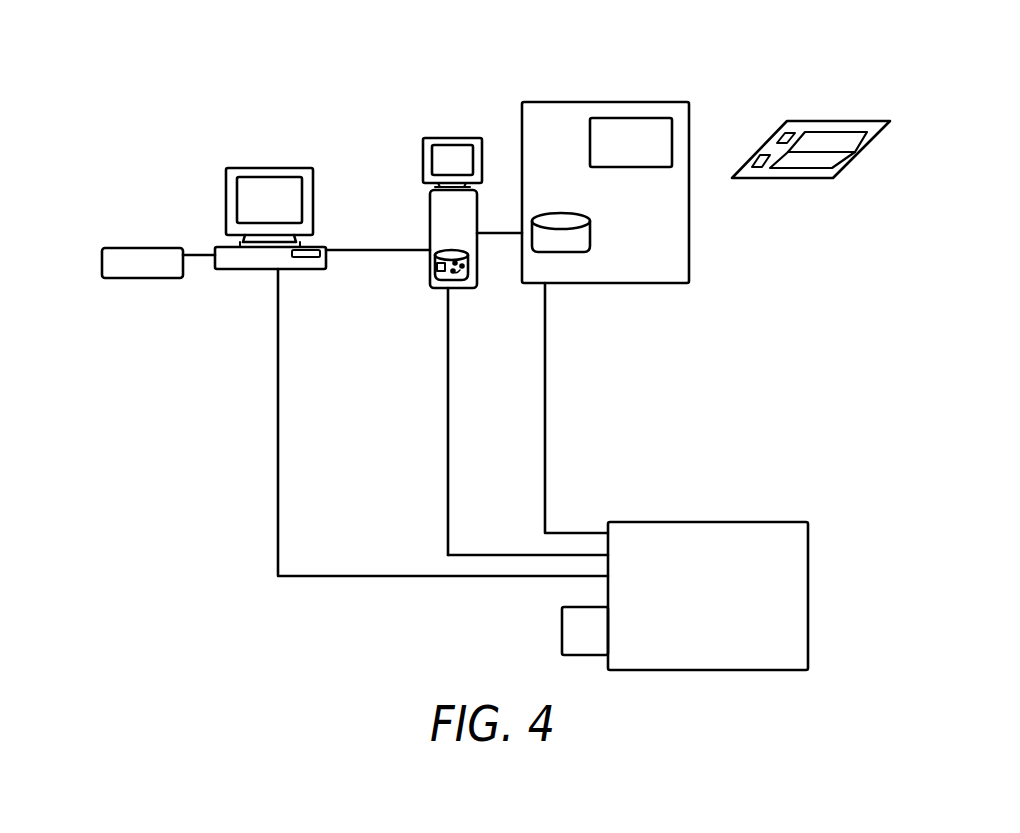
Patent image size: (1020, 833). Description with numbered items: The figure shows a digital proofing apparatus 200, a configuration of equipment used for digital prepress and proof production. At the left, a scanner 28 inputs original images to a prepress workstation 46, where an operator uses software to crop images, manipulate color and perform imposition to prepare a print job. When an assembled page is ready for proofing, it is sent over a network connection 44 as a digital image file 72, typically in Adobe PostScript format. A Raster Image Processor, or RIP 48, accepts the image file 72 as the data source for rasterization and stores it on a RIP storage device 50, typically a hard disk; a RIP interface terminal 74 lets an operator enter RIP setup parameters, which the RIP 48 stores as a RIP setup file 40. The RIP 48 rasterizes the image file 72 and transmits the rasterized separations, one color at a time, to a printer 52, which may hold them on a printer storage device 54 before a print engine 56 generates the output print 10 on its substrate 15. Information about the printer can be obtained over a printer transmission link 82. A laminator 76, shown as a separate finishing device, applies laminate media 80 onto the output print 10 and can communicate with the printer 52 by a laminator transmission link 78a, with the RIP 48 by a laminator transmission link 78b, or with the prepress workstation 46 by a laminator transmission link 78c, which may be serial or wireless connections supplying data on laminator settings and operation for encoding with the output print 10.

The digital proofing apparatus 200 is at (178, 100).
The prepress workstation 46 is at (254, 168).
The network connection 44 is at (340, 250).
The scanner 28 is at (152, 278).
The RIP interface terminal 74 is at (438, 137).
The Raster Image Processor (RIP) 48 is at (428, 216).
The printer transmission link 82 is at (497, 233).
The RIP setup file 40 is at (443, 274).
The digital image file 72 is at (437, 267).
The RIP storage device 50 is at (465, 282).
The printer 52 is at (647, 283).
The print engine 56 is at (641, 118).
The printer storage device 54 is at (572, 252).
The laminator transmission link 78a is at (581, 533).
The laminator transmission link 78b is at (480, 555).
The laminator transmission link 78c is at (325, 576).
The laminator 76 is at (739, 522).
The laminate media 80 is at (562, 636).
The output print 10 is at (790, 180).
The substrate 15 is at (812, 180).